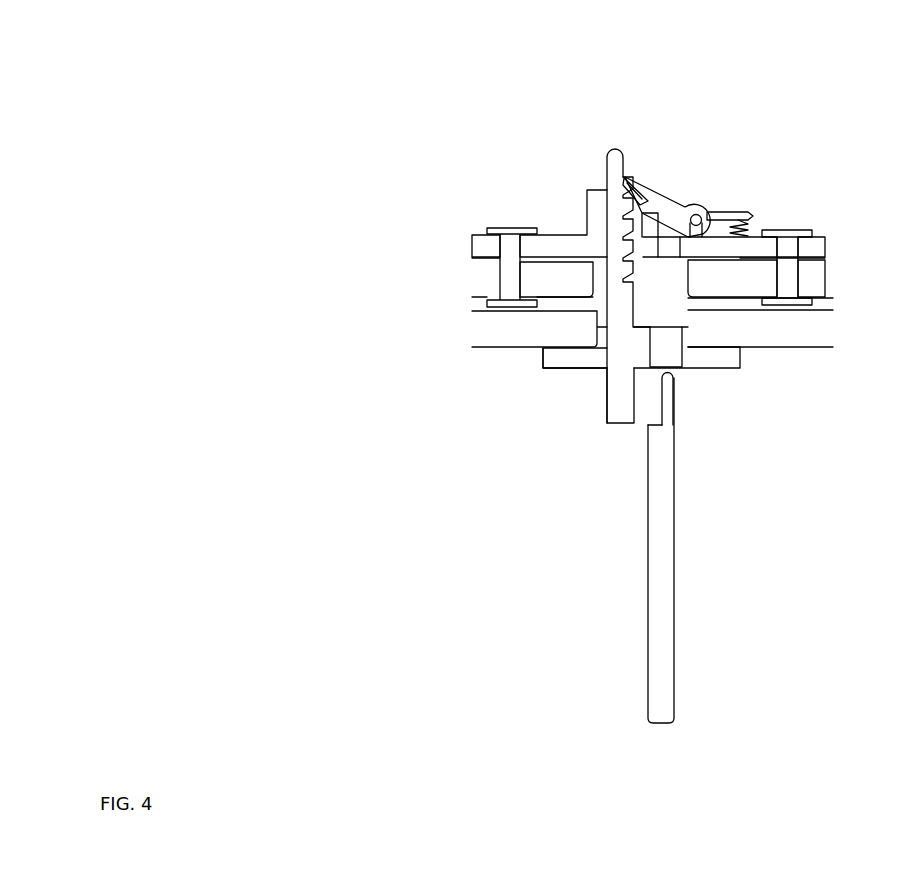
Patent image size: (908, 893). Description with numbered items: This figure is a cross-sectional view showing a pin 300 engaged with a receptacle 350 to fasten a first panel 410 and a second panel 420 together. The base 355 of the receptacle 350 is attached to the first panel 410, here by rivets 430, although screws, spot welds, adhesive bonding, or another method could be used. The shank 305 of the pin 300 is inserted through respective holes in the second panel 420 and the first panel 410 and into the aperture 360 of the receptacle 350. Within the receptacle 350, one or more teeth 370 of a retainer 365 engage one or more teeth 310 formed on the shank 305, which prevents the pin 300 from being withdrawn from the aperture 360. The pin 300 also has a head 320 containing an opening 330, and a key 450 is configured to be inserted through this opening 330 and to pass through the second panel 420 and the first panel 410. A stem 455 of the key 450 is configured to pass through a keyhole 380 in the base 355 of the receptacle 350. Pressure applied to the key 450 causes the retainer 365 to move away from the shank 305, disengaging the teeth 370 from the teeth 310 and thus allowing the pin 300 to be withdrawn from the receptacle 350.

The pin 300 is at (583, 447).
The shank 305 is at (598, 158).
The teeth 310 is at (627, 172).
The head 320 is at (710, 370).
The opening 330 is at (677, 372).
The receptacle 350 is at (815, 124).
The base 355 is at (473, 237).
The aperture 360 is at (603, 190).
The retainer 365 is at (673, 198).
The teeth 370 is at (636, 178).
The keyhole 380 is at (670, 255).
The first panel 410 is at (473, 311).
The second panel 420 is at (490, 347).
The rivets 430 is at (507, 228).
The key 450 is at (675, 587).
The stem 455 is at (660, 398).